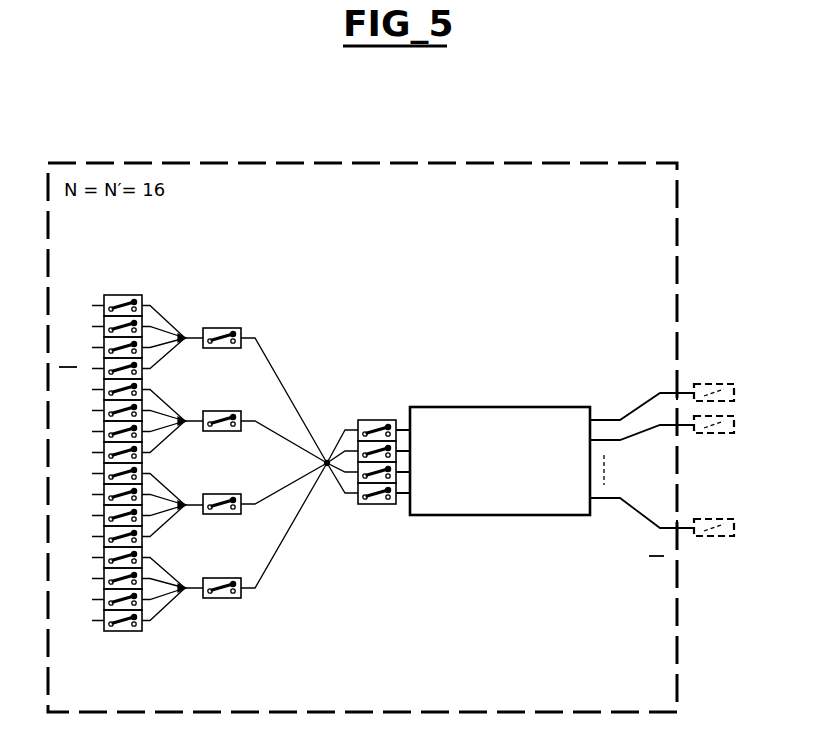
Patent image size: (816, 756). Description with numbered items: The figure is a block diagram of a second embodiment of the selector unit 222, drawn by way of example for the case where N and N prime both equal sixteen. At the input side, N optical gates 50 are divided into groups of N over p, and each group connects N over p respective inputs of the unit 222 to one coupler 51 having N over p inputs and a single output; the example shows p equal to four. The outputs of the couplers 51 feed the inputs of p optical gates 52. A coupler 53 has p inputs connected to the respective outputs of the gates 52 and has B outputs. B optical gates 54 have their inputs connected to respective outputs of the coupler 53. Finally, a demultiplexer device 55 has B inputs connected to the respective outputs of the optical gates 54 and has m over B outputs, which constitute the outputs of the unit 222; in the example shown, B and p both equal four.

The optical gates 50 is at (124, 295).
The coupler 51 is at (186, 342).
The optical gates 52 is at (243, 328).
The coupler 53 is at (327, 458).
The optical gates 54 is at (381, 420).
The demultiplexer device 55 is at (518, 407).
The selector unit 222 is at (627, 163).